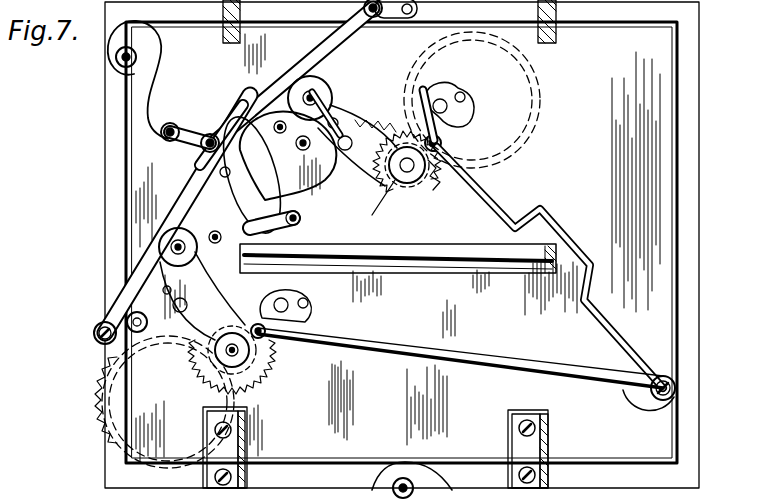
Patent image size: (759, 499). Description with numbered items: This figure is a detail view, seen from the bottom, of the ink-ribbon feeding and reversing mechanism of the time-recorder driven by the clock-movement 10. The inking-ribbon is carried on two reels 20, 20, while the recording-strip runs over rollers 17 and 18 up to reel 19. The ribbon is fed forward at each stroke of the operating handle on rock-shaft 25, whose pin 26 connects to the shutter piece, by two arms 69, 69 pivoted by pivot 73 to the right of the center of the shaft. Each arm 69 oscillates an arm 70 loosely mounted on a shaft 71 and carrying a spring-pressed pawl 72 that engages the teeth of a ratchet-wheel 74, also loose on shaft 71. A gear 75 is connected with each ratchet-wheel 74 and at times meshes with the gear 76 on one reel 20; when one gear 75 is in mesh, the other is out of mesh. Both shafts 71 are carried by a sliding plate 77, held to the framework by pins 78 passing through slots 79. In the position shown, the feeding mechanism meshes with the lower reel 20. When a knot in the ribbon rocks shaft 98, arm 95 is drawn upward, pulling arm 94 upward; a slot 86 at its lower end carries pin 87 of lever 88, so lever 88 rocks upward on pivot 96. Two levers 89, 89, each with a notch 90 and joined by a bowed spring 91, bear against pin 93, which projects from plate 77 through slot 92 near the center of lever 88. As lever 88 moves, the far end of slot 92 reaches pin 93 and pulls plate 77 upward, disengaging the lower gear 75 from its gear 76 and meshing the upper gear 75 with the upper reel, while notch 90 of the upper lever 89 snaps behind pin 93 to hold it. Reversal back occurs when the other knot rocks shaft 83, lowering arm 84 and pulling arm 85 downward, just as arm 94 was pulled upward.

The clock-movement 10 is at (423, 107).
The roller 17 is at (501, 274).
The roller 18 is at (333, 103).
The reel 19 is at (316, 93).
The reel 20 is at (321, 250).
The rock-shaft 25 is at (414, 490).
The pin 26 is at (641, 416).
The arm 69 is at (566, 238).
The arm 70 is at (438, 178).
The shaft 71 is at (407, 176).
The spring-pressed pawl 72 is at (450, 128).
The pivot 73 is at (676, 388).
The ratchet-wheel 74 is at (414, 192).
The gear 75 is at (394, 178).
The gear 76 is at (542, 90).
The sliding plate 77 is at (177, 214).
The pin 78 is at (159, 248).
The slot 79 is at (216, 244).
The shaft 83 is at (140, 333).
The arm 84 is at (118, 325).
The arm 85 is at (163, 228).
The slot 86 is at (240, 107).
The pin 87 is at (207, 134).
The lever 88 is at (171, 123).
The lever 89 is at (282, 227).
The notch 90 is at (274, 175).
The bowed spring 91 is at (162, 52).
The slot 92 is at (196, 239).
The pin 93 is at (283, 135).
The arm 94 is at (333, 45).
The arm 95 is at (388, 25).
The pivot 96 is at (306, 222).
The shaft 98 is at (414, 9).